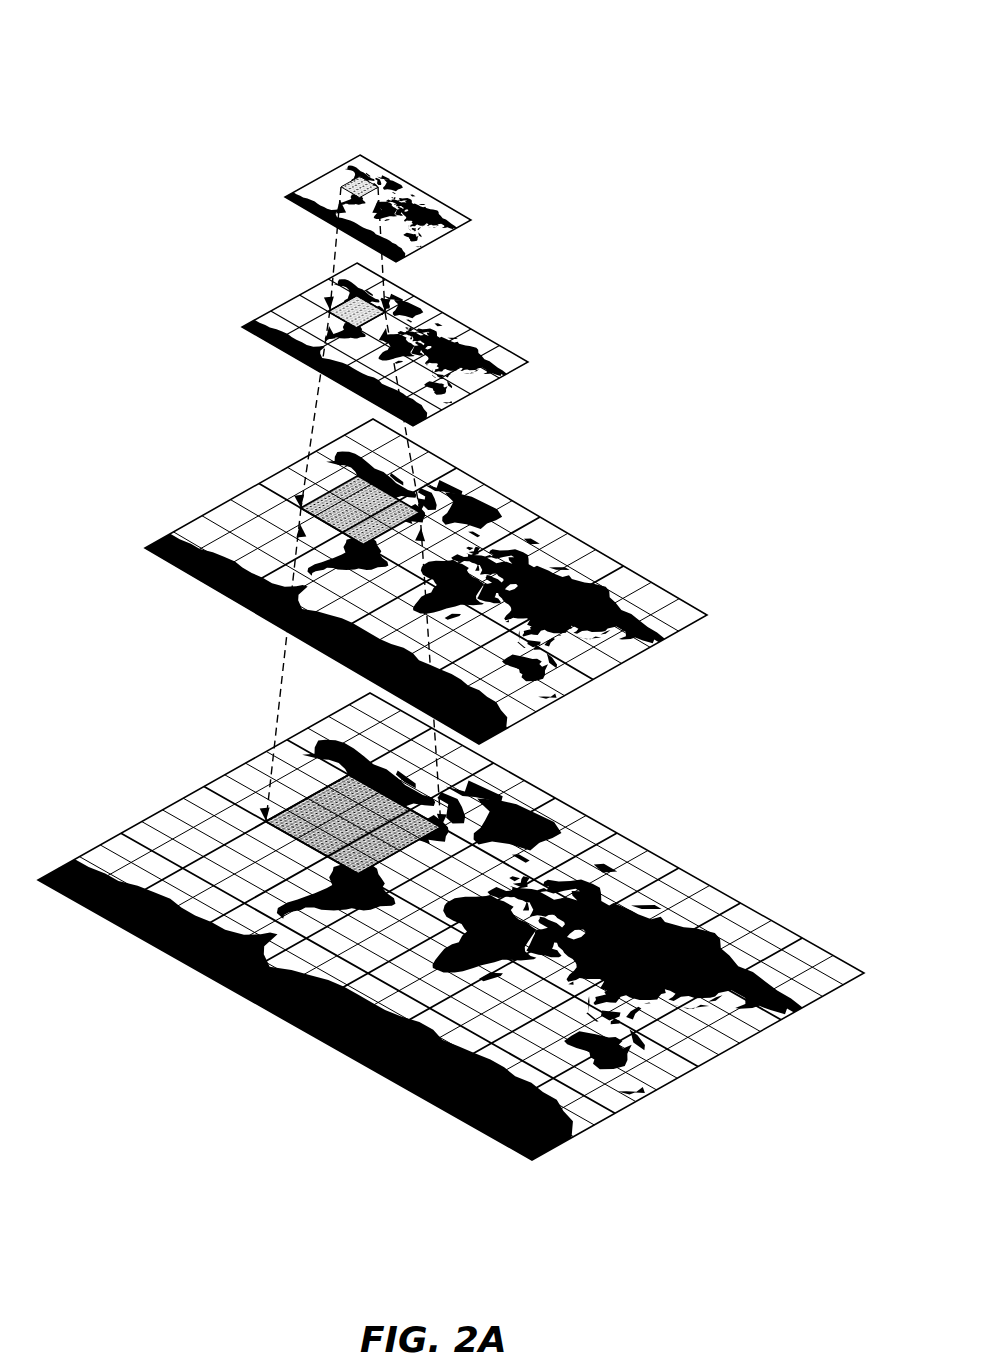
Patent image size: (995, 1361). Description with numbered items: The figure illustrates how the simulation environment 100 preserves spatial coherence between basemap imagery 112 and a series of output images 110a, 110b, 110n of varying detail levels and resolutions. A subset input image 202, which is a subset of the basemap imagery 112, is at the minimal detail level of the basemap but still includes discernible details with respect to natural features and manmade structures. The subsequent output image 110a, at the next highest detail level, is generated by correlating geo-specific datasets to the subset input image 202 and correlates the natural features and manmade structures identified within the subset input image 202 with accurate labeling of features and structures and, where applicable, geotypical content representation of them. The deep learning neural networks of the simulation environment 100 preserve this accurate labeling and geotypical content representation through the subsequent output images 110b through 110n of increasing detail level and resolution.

The simulation environment 100 is at (124, 58).
The basemap imagery 112 is at (401, 187).
The subset input image 202 is at (341, 186).
The output image 110a is at (325, 298).
The output image 110b is at (355, 498).
The output image 110n is at (353, 813).